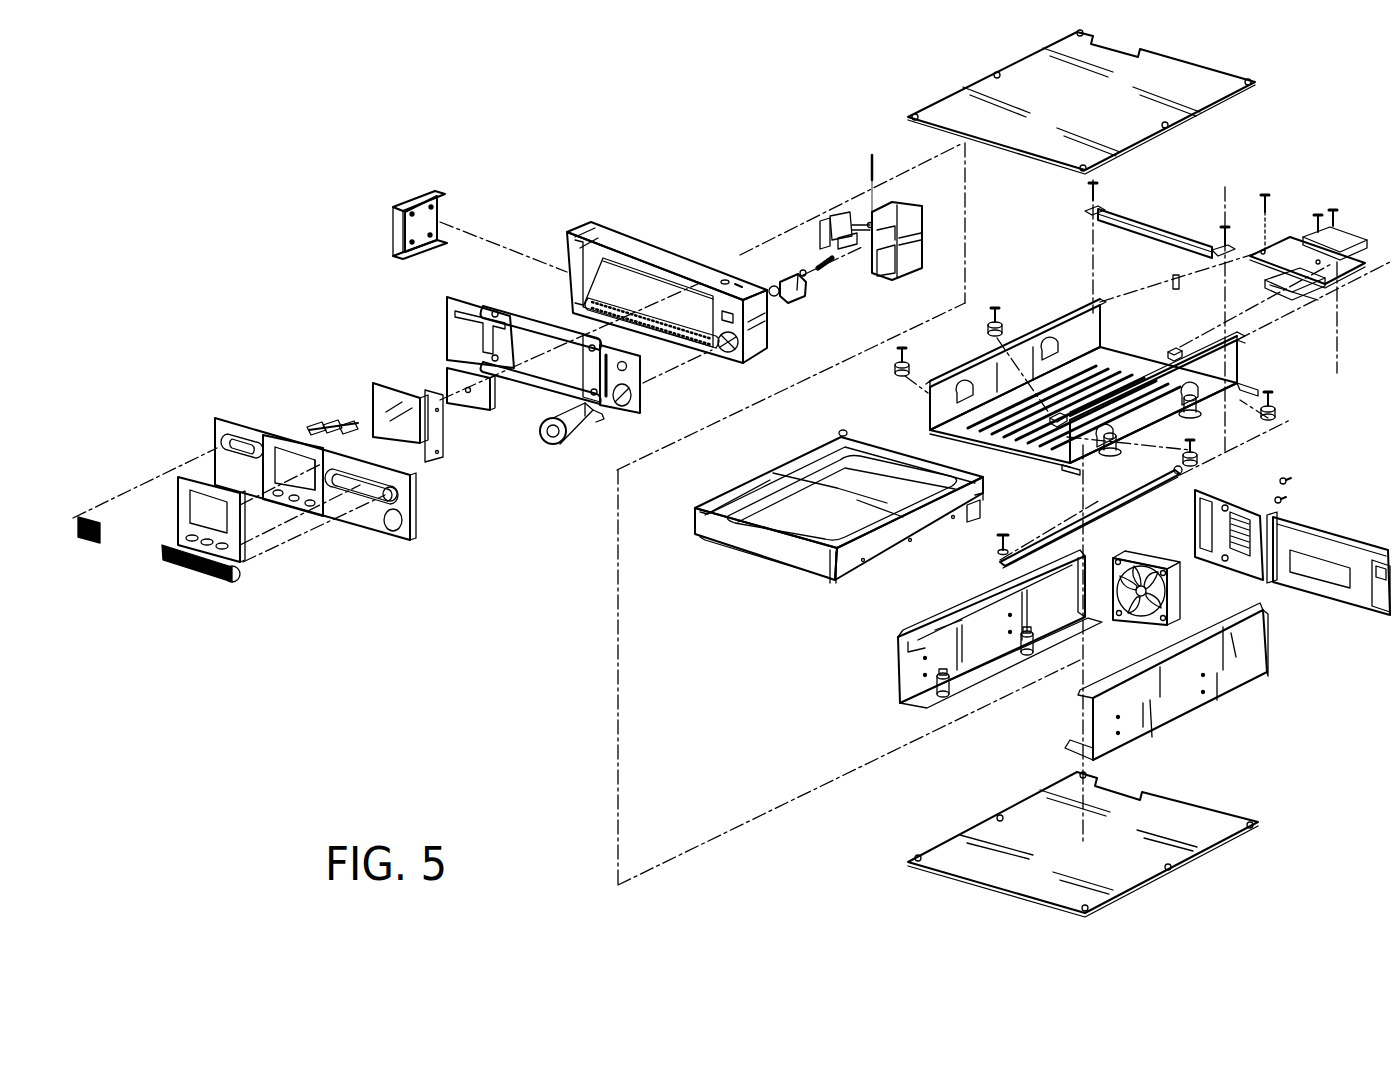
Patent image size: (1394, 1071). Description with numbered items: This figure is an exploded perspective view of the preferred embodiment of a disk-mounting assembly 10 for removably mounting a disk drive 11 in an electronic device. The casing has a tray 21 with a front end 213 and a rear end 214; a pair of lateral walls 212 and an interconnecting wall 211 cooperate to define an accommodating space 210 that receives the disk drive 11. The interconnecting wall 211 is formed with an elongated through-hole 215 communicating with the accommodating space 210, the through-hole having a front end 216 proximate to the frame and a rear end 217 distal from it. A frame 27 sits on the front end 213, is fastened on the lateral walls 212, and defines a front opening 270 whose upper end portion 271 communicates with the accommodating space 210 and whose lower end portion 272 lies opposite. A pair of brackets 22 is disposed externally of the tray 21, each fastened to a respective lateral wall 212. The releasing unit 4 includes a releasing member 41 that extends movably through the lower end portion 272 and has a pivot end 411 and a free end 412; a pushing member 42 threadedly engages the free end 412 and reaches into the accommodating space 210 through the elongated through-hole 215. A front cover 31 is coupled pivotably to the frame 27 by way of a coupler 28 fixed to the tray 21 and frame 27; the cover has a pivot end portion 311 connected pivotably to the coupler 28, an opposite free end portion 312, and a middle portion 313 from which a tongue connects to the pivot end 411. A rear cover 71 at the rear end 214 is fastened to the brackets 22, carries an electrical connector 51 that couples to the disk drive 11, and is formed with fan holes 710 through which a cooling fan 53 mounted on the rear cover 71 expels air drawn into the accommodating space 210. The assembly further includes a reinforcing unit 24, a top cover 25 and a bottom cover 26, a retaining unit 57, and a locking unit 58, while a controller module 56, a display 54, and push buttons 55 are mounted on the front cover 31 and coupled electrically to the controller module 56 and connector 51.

The disk-mounting assembly 10 is at (268, 161).
The disk drive 11 is at (752, 545).
The tray 21 is at (1074, 373).
The accommodating space 210 is at (1080, 326).
The interconnecting wall 211 is at (1032, 452).
The lateral walls 212 is at (940, 410).
The front end 213 is at (1002, 432).
The rear end 214 is at (1182, 358).
The elongated through-hole 215 is at (1126, 373).
The front end of elongated through-hole 216 is at (1052, 417).
The rear end of elongated through-hole 217 is at (1172, 352).
The brackets 22 is at (912, 667).
The reinforcing unit 24 is at (1165, 238).
The top cover 25 is at (1210, 92).
The bottom cover 26 is at (1217, 837).
The frame 27 is at (656, 279).
The front opening 270 is at (648, 280).
The upper end portion 271 is at (683, 297).
The lower end portion 272 is at (630, 315).
The coupler 28 is at (420, 207).
The front cover 31 is at (510, 361).
The pivot end portion 311 is at (460, 340).
The free end portion 312 is at (606, 405).
The middle portion 313 is at (548, 380).
The releasing unit 4 is at (1107, 501).
The releasing member 41 is at (1103, 497).
The pivot end 411 is at (1000, 550).
The free end 412 is at (1185, 472).
The pushing member 42 is at (1174, 280).
The electrical connector 51 is at (1328, 285).
The cooling fan 53 is at (1150, 625).
The display 54 is at (375, 405).
The push buttons 55 is at (320, 425).
The controller module 56 is at (456, 382).
The retaining unit 57 is at (790, 294).
The locking unit 58 is at (570, 431).
The rear cover 71 is at (1292, 546).
The fan holes 710 is at (1247, 512).